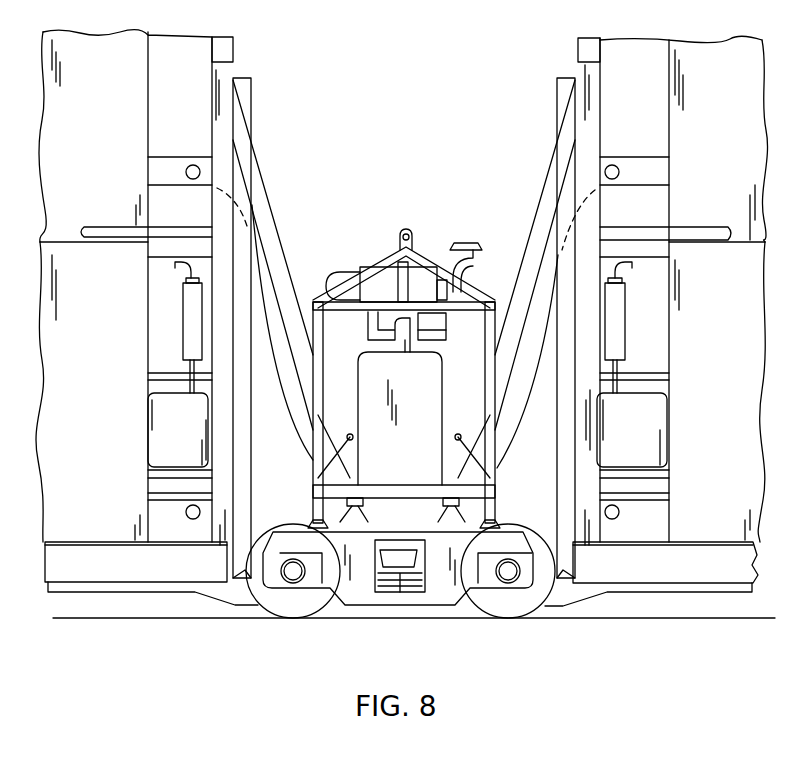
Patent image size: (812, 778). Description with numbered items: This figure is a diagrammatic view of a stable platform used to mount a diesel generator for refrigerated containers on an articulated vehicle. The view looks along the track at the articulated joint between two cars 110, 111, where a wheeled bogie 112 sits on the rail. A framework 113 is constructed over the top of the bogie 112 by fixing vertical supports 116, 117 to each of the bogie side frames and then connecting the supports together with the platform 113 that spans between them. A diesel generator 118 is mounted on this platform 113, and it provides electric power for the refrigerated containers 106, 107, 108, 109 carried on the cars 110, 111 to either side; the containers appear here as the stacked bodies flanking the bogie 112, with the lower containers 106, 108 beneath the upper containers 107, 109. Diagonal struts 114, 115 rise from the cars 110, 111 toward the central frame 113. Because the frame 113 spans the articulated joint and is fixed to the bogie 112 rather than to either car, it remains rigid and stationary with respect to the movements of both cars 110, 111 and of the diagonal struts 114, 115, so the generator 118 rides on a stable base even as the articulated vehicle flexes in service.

The refrigerated container 106 is at (108, 463).
The refrigerated container 107 is at (110, 110).
The refrigerated container 108 is at (722, 465).
The refrigerated container 109 is at (732, 112).
The car 110 is at (658, 586).
The car 111 is at (112, 583).
The bogie 112 is at (368, 619).
The framework 113 is at (391, 484).
The diagonal strut 114 is at (277, 232).
The diagonal strut 115 is at (535, 222).
The vertical support 116 is at (313, 466).
The vertical support 117 is at (496, 470).
The diesel generator 118 is at (371, 362).